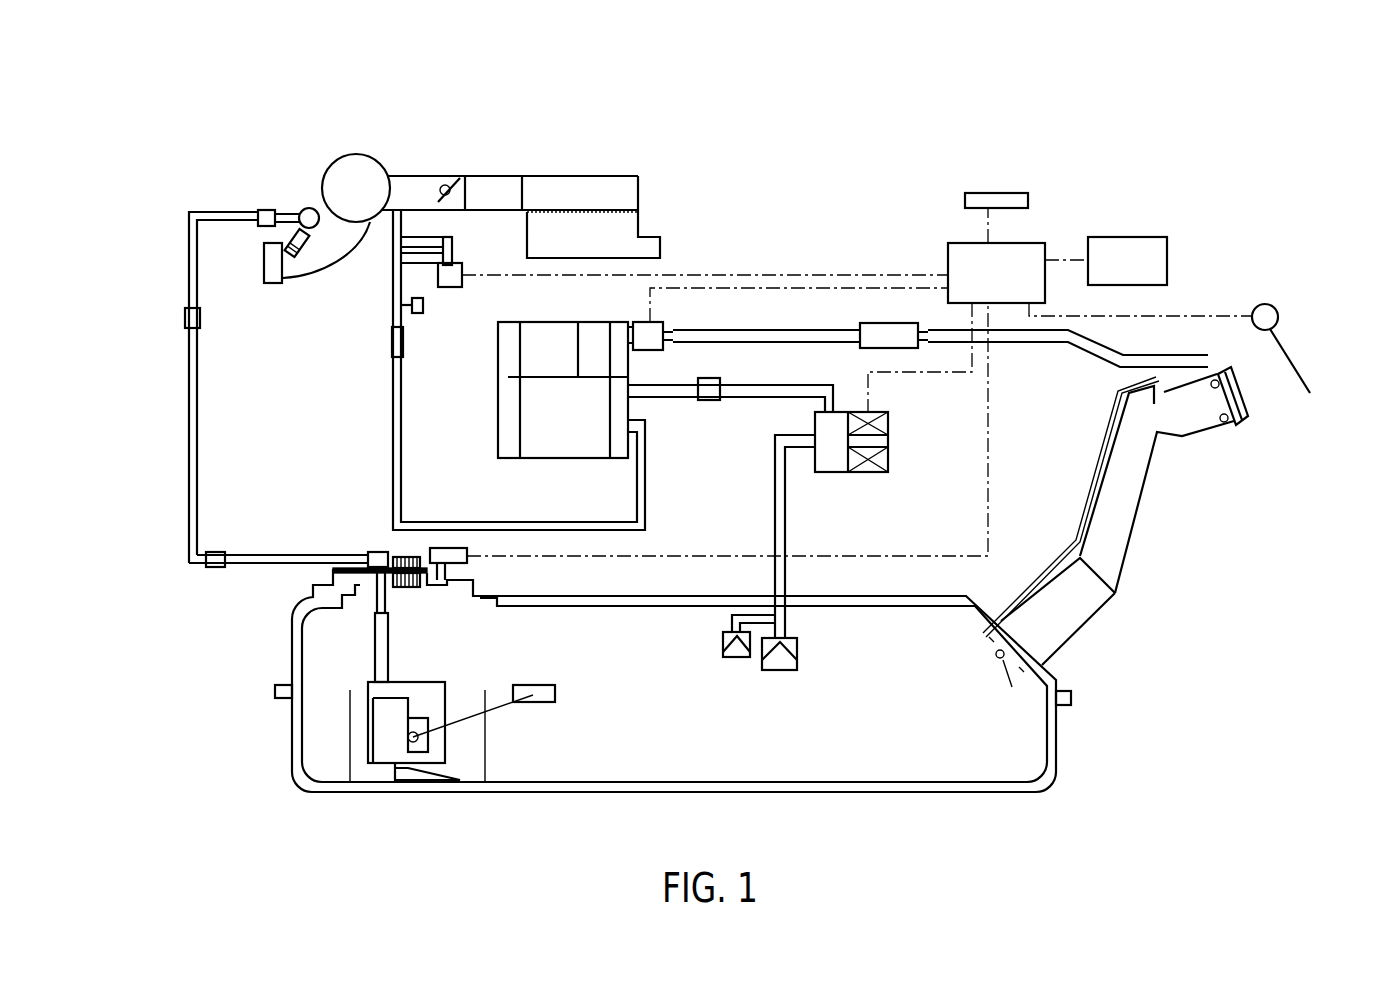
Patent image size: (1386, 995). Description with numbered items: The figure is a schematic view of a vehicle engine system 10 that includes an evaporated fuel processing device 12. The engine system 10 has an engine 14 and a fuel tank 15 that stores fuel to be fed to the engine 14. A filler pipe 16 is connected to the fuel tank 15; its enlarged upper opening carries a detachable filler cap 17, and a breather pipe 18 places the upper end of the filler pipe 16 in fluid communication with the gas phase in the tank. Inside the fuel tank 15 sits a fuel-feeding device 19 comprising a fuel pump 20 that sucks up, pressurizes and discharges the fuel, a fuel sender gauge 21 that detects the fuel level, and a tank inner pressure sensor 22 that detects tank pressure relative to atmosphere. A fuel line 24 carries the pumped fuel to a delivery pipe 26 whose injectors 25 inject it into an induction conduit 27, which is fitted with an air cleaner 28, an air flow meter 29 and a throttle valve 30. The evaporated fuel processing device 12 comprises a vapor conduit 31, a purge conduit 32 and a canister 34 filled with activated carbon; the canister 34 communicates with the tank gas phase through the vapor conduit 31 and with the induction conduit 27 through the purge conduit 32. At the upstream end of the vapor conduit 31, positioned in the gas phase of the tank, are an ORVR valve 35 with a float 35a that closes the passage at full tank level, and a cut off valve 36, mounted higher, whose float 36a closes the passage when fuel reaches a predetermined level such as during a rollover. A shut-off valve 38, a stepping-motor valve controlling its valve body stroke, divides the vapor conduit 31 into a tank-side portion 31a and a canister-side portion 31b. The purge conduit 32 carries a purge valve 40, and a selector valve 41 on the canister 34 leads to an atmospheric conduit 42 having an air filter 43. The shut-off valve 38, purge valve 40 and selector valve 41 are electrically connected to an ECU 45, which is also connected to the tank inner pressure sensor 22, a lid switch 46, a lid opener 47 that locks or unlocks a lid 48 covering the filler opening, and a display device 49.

The engine system 10 is at (200, 172).
The evaporated fuel processing device 12 is at (750, 265).
The engine 14 is at (273, 283).
The fuel tank 15 is at (1060, 738).
The filler pipe 16 is at (1136, 514).
The filler cap 17 is at (1250, 402).
The breather pipe 18 is at (1099, 470).
The fuel-feeding device 19 is at (358, 677).
The fuel pump 20 is at (388, 758).
The fuel sender gauge 21 is at (422, 750).
The tank inner pressure sensor 22 is at (452, 548).
The fuel supply pipe 24 is at (189, 468).
The injectors 25 is at (290, 238).
The delivery pipe 26 is at (303, 200).
The induction conduit 27 is at (305, 275).
The air cleaner 28 is at (582, 175).
The air flow meter 29 is at (487, 183).
The throttle valve 30 is at (447, 185).
The vapor conduit 31 is at (745, 493).
The downstream portion of the vapor conduit 31a is at (775, 483).
The upstream portion of the vapor conduit 31b is at (742, 385).
The purge conduit 32 is at (393, 443).
The canister 34 is at (498, 412).
The ORVR valve 35 is at (821, 689).
The float 35a is at (778, 662).
The cut off valve 36 is at (696, 676).
The float 36a is at (735, 652).
The shut-off valve 38 is at (855, 475).
The purge valve 40 is at (447, 287).
The selector valve 41 is at (643, 322).
The atmospheric conduit 42 is at (777, 330).
The air filter 43 is at (887, 323).
The ECU 45 is at (1028, 243).
The lid switch 46 is at (1000, 193).
The lid opener 47 is at (1267, 303).
The lid 48 is at (1293, 362).
The display device 49 is at (1132, 237).